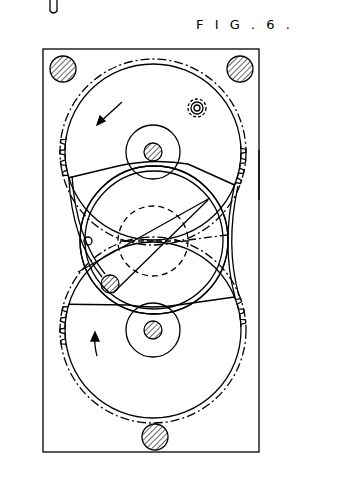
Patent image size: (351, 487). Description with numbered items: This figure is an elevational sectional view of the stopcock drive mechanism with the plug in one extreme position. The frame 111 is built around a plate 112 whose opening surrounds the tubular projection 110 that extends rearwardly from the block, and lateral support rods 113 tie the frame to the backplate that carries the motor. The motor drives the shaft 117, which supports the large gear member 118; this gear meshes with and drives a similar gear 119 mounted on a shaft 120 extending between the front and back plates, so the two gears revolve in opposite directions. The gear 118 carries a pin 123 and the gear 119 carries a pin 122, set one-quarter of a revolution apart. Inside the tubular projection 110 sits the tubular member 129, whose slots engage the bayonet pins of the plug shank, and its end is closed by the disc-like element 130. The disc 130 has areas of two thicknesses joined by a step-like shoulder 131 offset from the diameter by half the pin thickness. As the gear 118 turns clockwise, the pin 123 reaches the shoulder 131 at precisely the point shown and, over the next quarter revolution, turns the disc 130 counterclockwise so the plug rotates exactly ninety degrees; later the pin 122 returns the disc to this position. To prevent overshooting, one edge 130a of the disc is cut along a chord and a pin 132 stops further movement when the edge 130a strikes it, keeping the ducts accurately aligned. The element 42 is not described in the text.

The pin 42 is at (50, 4).
The tubular projection 110 is at (100, 244).
The frame 111 is at (264, 124).
The plate 112 is at (259, 170).
The lateral support rods 113 is at (50, 68).
The shaft 117 is at (151, 341).
The large gear member 118 is at (246, 313).
The gear 119 is at (152, 62).
The shaft 120 is at (153, 143).
The pin 122 is at (189, 106).
The pin 123 is at (101, 279).
The tubular member 129 is at (217, 197).
The disc-like element 130 is at (224, 272).
The edge 130a is at (131, 210).
The step-like shoulder 131 is at (188, 218).
The pin 132 is at (84, 242).